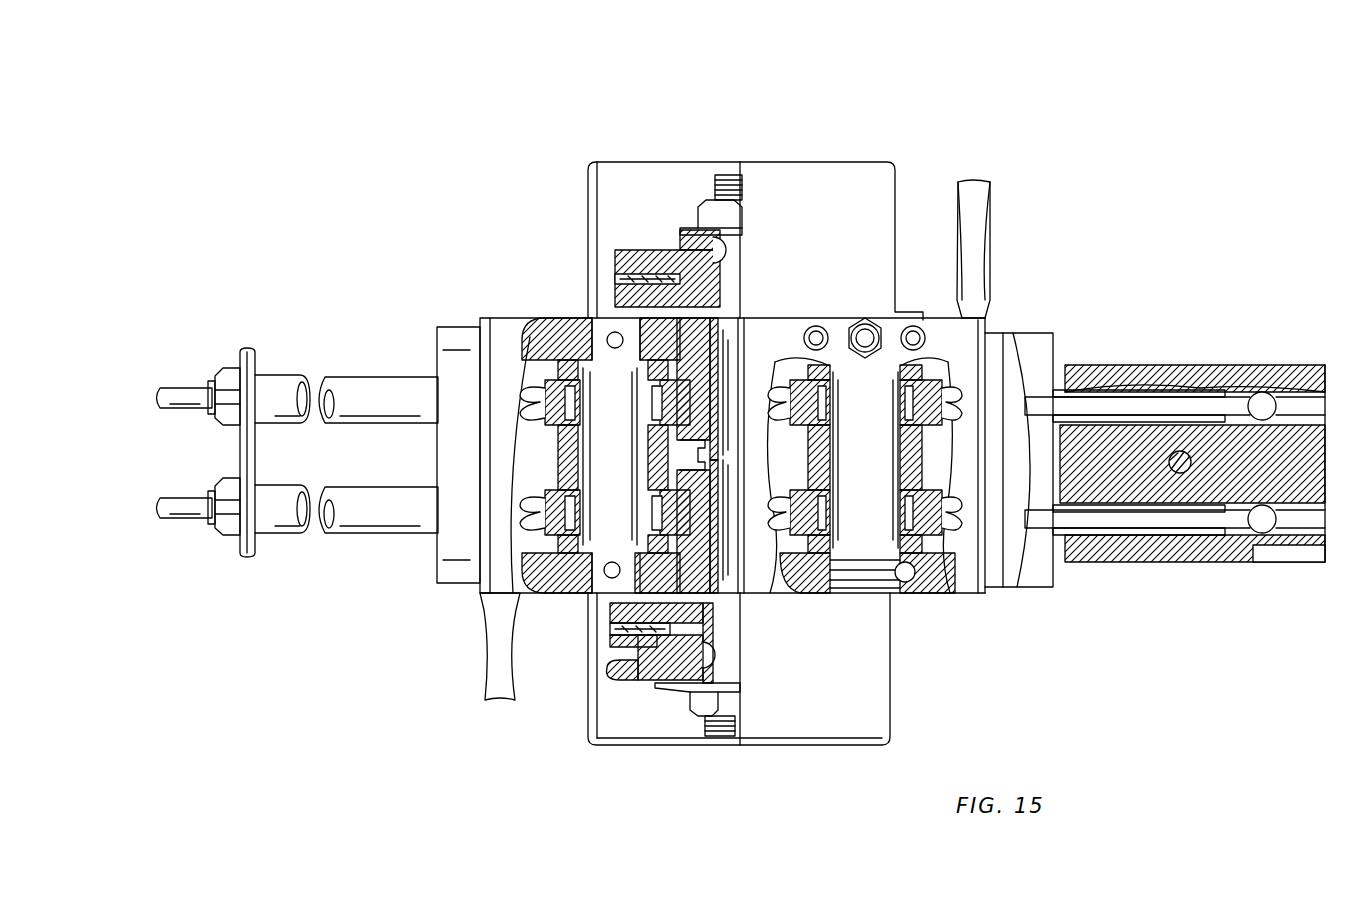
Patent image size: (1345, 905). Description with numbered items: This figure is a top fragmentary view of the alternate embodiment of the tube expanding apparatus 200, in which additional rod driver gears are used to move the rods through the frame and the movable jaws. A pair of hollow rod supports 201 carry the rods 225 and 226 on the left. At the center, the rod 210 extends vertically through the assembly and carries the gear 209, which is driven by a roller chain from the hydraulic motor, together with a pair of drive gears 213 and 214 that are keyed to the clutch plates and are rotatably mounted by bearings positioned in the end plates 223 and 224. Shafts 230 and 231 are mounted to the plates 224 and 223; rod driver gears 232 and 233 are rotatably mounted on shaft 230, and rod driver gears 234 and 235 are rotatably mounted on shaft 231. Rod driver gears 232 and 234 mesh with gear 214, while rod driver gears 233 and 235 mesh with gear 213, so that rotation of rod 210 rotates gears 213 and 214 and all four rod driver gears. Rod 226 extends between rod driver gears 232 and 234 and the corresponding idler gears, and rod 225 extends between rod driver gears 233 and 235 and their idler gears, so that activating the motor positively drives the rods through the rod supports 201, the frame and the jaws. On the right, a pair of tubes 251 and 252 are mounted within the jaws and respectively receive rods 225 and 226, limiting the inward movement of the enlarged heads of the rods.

The apparatus 200 is at (440, 176).
The hollow rod supports 201 is at (288, 376).
The gear 209 is at (620, 682).
The rod 210 is at (712, 734).
The drive gear 213 is at (720, 320).
The drive gear 214 is at (713, 545).
The plate 223 is at (548, 366).
The plate 224 is at (548, 597).
The rod 225 is at (172, 392).
The rod 226 is at (176, 520).
The shaft 230 is at (602, 345).
The shaft 231 is at (858, 546).
The rod driver gear 232 is at (548, 492).
The rod driver gear 233 is at (553, 385).
The rod driver gear 234 is at (930, 522).
The rod driver gear 235 is at (935, 382).
The tube 251 is at (1058, 374).
The tube 252 is at (1052, 592).